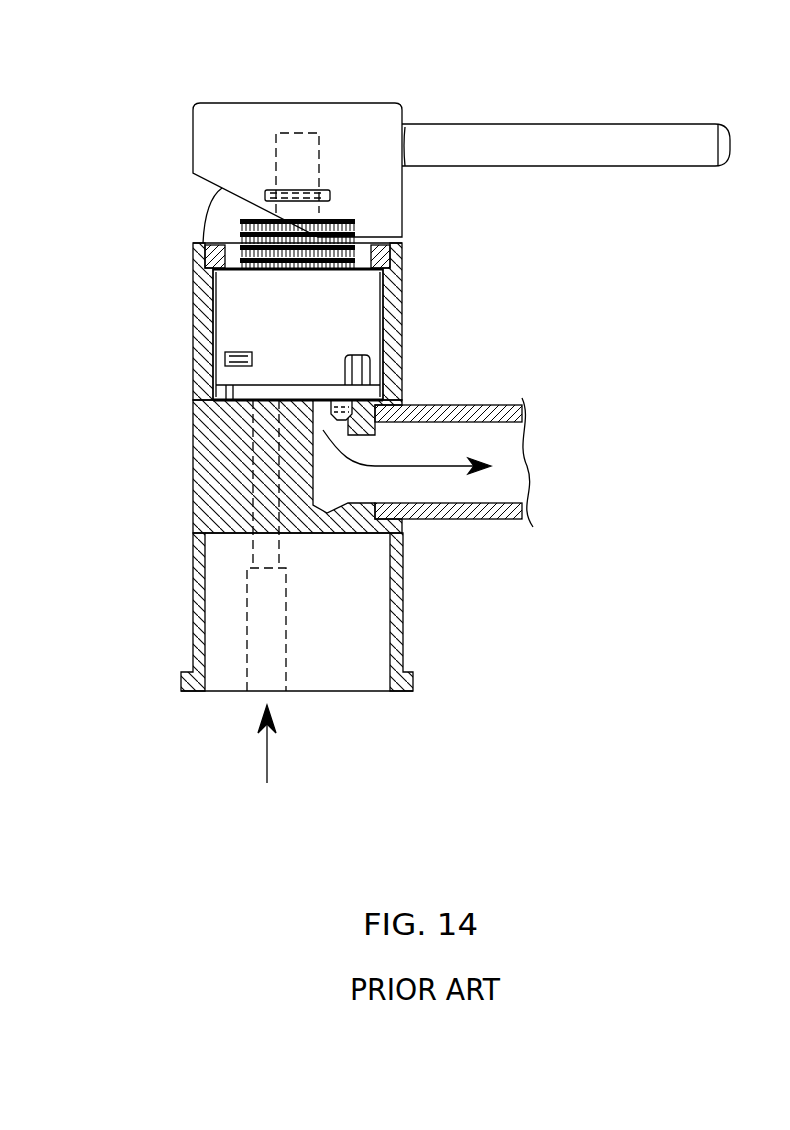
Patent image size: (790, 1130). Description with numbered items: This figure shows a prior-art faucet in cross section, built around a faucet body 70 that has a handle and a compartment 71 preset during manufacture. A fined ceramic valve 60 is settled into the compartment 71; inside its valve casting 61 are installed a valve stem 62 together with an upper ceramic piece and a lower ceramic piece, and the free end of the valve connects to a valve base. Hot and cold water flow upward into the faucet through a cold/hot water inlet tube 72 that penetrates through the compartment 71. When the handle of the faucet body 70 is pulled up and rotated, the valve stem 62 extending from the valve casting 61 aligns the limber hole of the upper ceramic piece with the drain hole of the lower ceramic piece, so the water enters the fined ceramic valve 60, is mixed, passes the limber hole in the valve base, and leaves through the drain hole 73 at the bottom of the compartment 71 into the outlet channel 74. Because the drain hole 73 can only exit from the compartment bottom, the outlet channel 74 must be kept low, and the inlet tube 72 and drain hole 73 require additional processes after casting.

The fined ceramic valve 60 is at (350, 305).
The valve casting 61 is at (233, 295).
The valve stem 62 is at (298, 150).
The faucet body 70 is at (163, 691).
The compartment 71 is at (193, 313).
The cold/hot water inlet tube 72 is at (262, 482).
The drain hole 73 is at (358, 480).
The outlet channel 74 is at (497, 404).